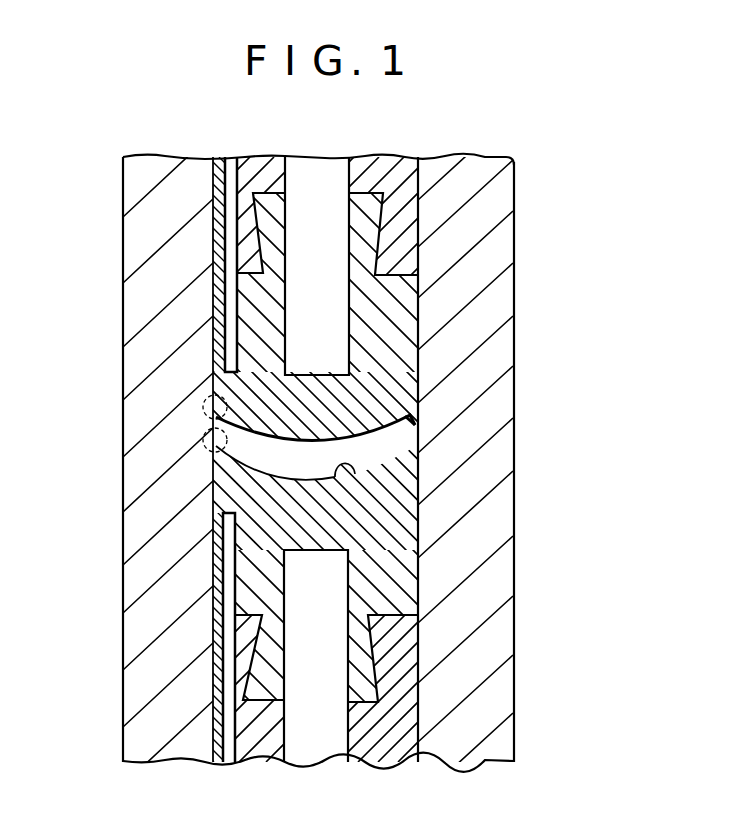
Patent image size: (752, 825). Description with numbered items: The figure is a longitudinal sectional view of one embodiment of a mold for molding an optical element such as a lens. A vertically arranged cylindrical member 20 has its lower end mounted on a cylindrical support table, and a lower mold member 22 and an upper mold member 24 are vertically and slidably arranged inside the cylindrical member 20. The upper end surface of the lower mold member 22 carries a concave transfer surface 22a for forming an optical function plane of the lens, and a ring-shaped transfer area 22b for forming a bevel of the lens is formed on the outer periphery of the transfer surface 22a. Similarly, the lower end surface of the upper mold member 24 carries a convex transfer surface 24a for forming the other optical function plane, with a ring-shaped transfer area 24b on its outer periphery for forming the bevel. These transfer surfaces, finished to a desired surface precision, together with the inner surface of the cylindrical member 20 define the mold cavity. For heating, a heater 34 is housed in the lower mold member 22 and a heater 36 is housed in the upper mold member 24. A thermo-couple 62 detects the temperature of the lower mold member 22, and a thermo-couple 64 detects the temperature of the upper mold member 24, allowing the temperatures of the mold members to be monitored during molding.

The cylindrical member 20 is at (500, 218).
The lower mold member 22 is at (383, 561).
The transfer surface 22a is at (360, 437).
The ring-shaped transfer area 22b is at (205, 450).
The upper mold member 24 is at (335, 397).
The transfer surface 24a is at (355, 473).
The ring-shaped transfer area 24b is at (205, 411).
The heater 34 is at (298, 586).
The heater 36 is at (298, 297).
The thermo-couple 62 is at (228, 680).
The thermo-couple 64 is at (228, 335).